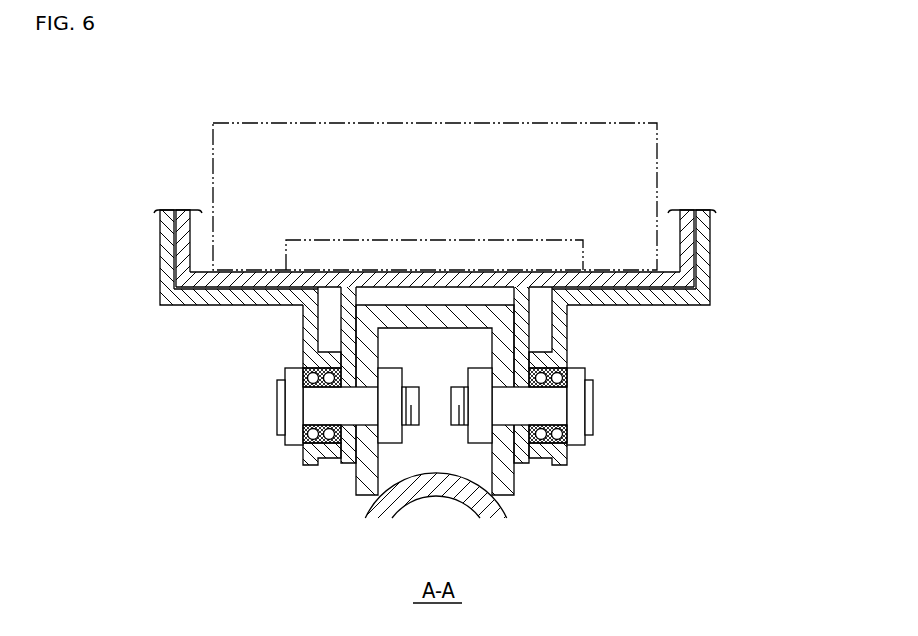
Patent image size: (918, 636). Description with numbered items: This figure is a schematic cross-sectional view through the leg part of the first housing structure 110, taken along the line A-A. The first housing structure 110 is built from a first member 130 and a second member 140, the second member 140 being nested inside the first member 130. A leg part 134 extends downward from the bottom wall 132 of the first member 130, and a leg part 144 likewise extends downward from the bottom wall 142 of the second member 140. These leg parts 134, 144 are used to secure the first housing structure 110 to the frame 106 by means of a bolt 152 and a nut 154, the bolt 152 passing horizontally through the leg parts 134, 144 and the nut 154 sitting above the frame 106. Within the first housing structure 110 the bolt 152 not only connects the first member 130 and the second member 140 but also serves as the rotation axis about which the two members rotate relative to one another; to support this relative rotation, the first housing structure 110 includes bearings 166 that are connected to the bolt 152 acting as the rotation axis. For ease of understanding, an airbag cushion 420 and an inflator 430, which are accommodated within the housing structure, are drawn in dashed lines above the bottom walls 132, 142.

The frame 106 is at (505, 478).
The first housing structure 110 is at (731, 269).
The first member 130 is at (157, 262).
The bottom wall 132 is at (233, 302).
The leg part 134 is at (305, 337).
The second member 140 is at (189, 226).
The bottom wall 142 is at (650, 283).
The leg part 144 is at (345, 312).
The bolt 152 is at (312, 406).
The nut 154 is at (390, 433).
The bearings 166 is at (313, 446).
The airbag cushion 420 is at (443, 134).
The inflator 430 is at (513, 247).